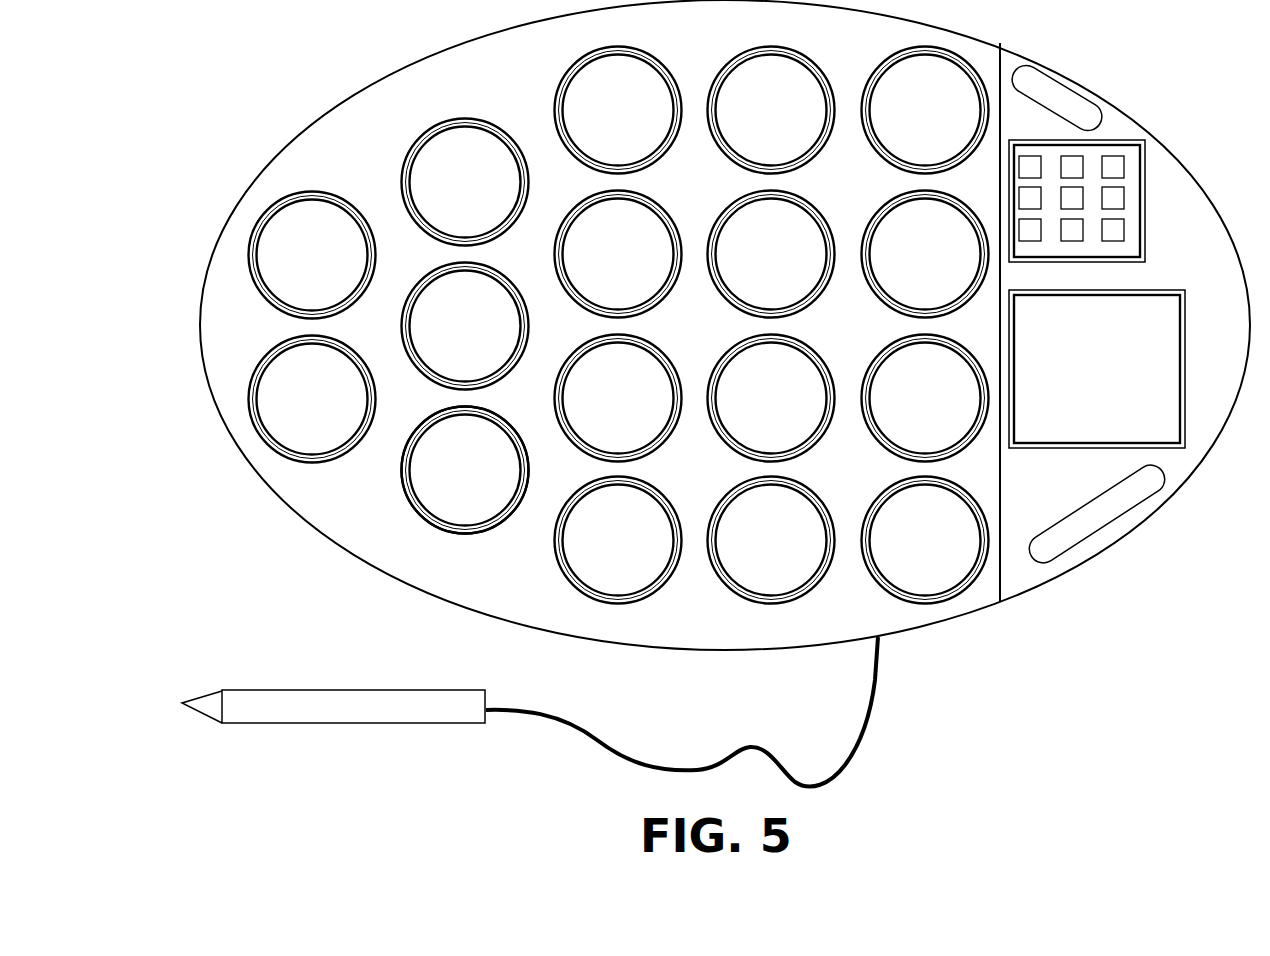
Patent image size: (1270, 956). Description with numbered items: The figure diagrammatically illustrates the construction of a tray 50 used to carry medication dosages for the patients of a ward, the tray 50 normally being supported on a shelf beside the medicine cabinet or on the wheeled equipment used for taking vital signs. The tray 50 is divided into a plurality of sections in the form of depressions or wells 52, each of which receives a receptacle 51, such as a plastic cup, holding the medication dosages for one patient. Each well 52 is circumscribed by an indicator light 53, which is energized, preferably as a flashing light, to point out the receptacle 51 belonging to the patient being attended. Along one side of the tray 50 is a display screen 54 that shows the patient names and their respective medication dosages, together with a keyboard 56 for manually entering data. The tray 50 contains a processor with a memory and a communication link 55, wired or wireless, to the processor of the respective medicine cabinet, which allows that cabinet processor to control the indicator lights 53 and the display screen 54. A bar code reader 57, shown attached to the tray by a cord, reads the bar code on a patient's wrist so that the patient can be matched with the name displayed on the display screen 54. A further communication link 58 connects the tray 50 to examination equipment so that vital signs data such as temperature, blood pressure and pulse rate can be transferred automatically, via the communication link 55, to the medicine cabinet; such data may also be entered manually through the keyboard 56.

The tray 50 is at (370, 70).
The receptacle 51 is at (305, 408).
The well 52 is at (483, 486).
The indicator light 53 is at (423, 517).
The display screen 54 is at (1150, 327).
The communication link 55 is at (1098, 517).
The keyboard 56 is at (1130, 167).
The bar code reader 57 is at (372, 698).
The communication link 58 is at (1042, 87).